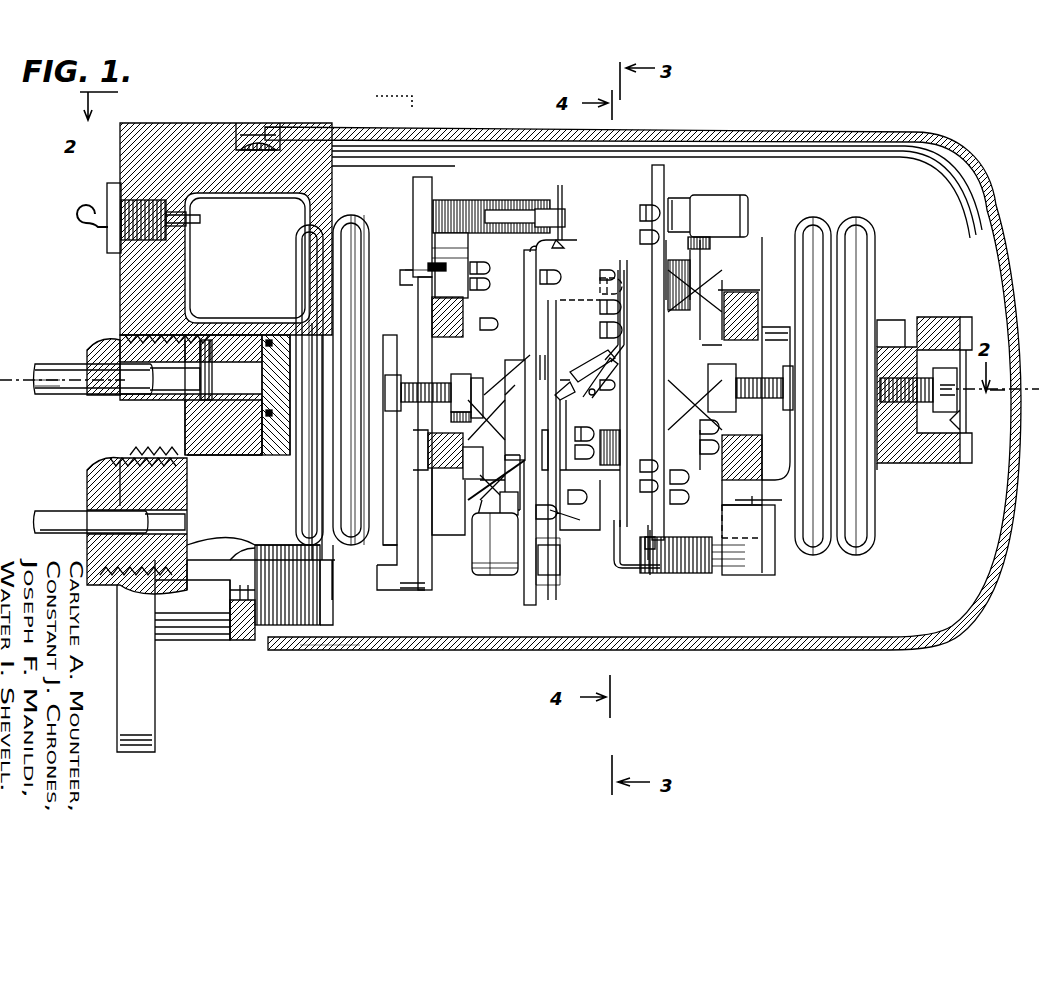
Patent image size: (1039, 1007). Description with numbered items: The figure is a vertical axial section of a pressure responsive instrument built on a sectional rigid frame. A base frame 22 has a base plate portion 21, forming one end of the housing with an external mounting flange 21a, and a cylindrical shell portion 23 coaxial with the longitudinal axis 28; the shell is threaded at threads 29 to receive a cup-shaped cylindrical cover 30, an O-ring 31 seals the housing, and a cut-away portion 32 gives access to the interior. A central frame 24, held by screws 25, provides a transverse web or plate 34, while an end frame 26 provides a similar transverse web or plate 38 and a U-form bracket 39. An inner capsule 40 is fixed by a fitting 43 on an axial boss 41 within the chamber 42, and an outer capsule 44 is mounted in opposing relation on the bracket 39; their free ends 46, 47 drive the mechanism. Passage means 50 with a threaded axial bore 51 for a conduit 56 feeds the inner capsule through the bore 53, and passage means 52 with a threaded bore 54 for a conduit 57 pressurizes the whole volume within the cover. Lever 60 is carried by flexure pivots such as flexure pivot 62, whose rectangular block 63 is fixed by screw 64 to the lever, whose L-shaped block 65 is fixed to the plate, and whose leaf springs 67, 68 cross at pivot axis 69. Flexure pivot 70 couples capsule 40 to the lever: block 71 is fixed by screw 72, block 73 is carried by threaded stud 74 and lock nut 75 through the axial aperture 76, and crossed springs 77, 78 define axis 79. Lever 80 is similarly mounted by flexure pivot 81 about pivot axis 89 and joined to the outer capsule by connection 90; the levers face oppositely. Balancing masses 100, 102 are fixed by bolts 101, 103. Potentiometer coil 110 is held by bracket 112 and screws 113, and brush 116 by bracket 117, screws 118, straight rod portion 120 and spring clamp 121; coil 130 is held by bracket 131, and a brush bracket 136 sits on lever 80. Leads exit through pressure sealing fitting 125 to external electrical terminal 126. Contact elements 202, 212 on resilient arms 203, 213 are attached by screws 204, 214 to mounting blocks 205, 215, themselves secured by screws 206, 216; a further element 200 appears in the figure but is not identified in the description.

The base plate portion 21 is at (128, 283).
The external mounting flange 21a is at (150, 713).
The base frame 22 is at (342, 645).
The cylindrical shell portion 23 is at (262, 135).
The central frame 24 is at (620, 480).
The screws 25 is at (487, 270).
The end frame 26 is at (918, 474).
The longitudinal axis 28 is at (27, 372).
The threads 29 is at (260, 640).
The cylindrical cover 30 is at (428, 656).
The O-ring 31 is at (232, 640).
The cut-away portion 32 is at (424, 178).
The transverse web or plate 34 is at (576, 300).
The transverse web or plate 38 is at (752, 448).
The bracket 39 is at (950, 450).
The inner capsule 40 is at (364, 213).
The axial boss 41 is at (220, 334).
The chamber 42 is at (258, 229).
The fitting 43 is at (284, 335).
The outer capsule 44 is at (884, 214).
The free end of inner capsule 46 is at (390, 350).
The free end of outer capsule 47 is at (794, 360).
The passage means 50 is at (118, 408).
The threaded axial bore 51 is at (135, 420).
The passage means 52 is at (94, 510).
The bore 53 is at (264, 345).
The threaded bore 54 is at (112, 503).
The conduit 56 is at (68, 393).
The conduit 57 is at (50, 515).
The lever 60 is at (524, 598).
The flexure pivot 62 is at (462, 504).
The rectangular block 63 is at (510, 512).
The screw 64 is at (552, 514).
The L-shaped block 65 is at (472, 470).
The leaf spring 67 is at (480, 480).
The leaf spring 68 is at (505, 462).
The pivot axis 69 is at (470, 496).
The flexure pivot 70 is at (520, 355).
The block 71 is at (542, 365).
The screw 72 is at (556, 370).
The block 73 is at (476, 418).
The threaded stud 74 is at (440, 378).
The lock nut 75 is at (452, 408).
The axial aperture 76 is at (430, 430).
The crossed spring 77 is at (488, 400).
The crossed spring 78 is at (510, 398).
The axis 79 is at (490, 400).
The lever 80 is at (664, 180).
The flexure pivot 81 is at (700, 264).
The pivot axis 89 is at (696, 290).
The connection 90 is at (702, 418).
The balancing mass 100 is at (480, 565).
The bolt 101 is at (560, 572).
The balancing mass 102 is at (736, 190).
The bolt 103 is at (640, 212).
The potentiometer coil 110 is at (482, 202).
The bracket 112 is at (452, 240).
The screws 113 is at (487, 285).
The brush 116 is at (510, 210).
The bracket 117 is at (530, 250).
The screws 118 is at (556, 280).
The straight rod portion 120 is at (563, 205).
The spring clamp 121 is at (566, 220).
The pressure sealing fitting 125 is at (122, 230).
The external electrical terminal 126 is at (75, 220).
The potentiometer coil 130 is at (676, 572).
The bracket 131 is at (750, 568).
The bracket 136 is at (640, 530).
The screw 200 is at (618, 390).
The contact element 202 is at (570, 410).
The resilient arm 203 is at (586, 378).
The screw 204 is at (588, 434).
The mounting block 205 is at (548, 452).
The screw 206 is at (592, 452).
The contact element 212 is at (594, 396).
The resilient arm 213 is at (623, 372).
The screw 214 is at (600, 332).
The mounting block 215 is at (620, 340).
The screw 216 is at (600, 308).